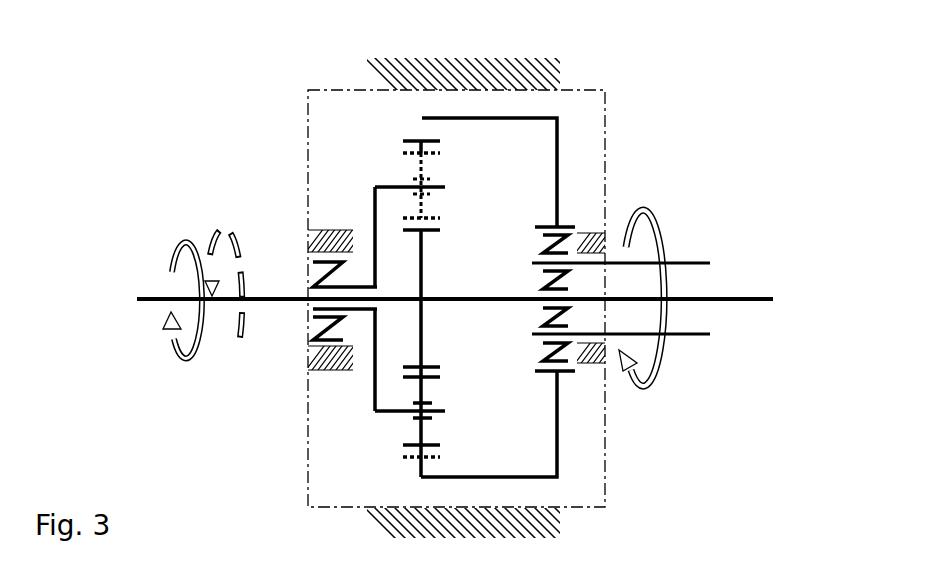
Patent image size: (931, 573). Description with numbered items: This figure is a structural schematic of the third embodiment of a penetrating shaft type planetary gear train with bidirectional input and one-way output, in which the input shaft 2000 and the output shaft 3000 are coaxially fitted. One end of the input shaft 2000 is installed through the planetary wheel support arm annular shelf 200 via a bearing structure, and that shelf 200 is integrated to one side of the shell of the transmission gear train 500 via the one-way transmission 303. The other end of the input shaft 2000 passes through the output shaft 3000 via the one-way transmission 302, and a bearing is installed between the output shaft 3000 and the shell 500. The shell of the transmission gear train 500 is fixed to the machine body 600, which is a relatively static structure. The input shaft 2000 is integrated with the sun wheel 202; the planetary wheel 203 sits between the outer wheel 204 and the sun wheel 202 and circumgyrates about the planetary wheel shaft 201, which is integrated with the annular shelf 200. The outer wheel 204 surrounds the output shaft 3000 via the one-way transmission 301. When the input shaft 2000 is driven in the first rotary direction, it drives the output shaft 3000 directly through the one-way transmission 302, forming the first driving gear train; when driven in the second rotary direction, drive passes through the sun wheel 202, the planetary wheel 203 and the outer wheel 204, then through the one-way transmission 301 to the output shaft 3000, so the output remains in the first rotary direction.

The planetary wheel support arm annular shelf 200 is at (377, 380).
The planetary wheel shaft 201 is at (440, 413).
The sun wheel 202 is at (440, 366).
The planetary wheel 203 is at (418, 163).
The outer wheel 204 is at (400, 457).
The one-way transmission 301 is at (547, 245).
The one-way transmission 302 is at (548, 320).
The one-way transmission 303 is at (317, 272).
The shell of the transmission gear train 500 is at (310, 143).
The machine body 600 is at (467, 77).
The input shaft 2000 is at (158, 297).
The output shaft 3000 is at (682, 263).